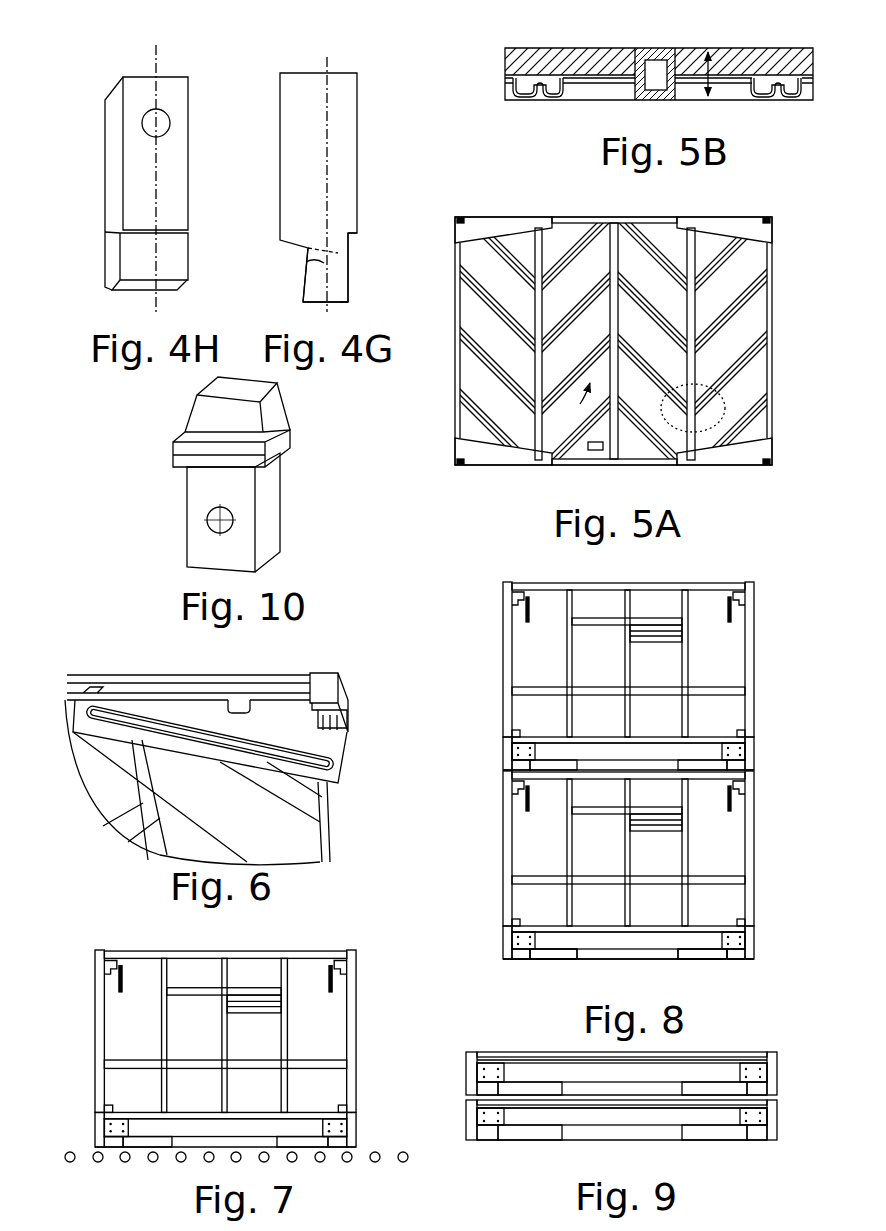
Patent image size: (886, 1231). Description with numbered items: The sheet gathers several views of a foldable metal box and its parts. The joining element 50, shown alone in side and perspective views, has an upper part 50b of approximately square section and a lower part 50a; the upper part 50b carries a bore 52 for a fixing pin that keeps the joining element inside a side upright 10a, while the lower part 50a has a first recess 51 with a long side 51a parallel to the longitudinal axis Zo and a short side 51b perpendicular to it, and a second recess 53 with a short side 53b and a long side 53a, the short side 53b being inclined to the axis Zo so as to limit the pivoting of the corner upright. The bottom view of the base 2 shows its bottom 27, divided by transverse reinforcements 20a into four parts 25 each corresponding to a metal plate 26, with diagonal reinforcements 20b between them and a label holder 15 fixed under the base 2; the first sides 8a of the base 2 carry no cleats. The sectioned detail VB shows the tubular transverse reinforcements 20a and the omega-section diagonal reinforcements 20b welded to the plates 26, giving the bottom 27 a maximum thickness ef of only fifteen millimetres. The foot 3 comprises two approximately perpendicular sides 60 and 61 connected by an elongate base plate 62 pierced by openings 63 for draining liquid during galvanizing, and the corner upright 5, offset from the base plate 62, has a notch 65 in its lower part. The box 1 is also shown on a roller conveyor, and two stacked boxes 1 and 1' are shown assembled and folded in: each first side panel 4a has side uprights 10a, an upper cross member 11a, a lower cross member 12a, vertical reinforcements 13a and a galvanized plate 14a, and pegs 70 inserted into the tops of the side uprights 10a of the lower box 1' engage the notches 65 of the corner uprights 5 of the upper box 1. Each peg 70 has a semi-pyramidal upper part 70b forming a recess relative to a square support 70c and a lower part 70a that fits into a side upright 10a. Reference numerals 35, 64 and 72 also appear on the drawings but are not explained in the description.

In FIG. 8, the box 1 is at (626, 743).
In FIG. 7, the box 1 is at (246, 1048).
In FIG. 9, the box 1 is at (577, 1073).
In FIG. 8, the lower box 1' is at (596, 886).
In FIG. 9, the lower box 1' is at (576, 1120).
In FIG. 8, the base 2 is at (606, 947).
In FIG. 9, the base 2 is at (673, 1072).
In FIG. 5A, the foot 3 is at (452, 240).
In FIG. 8, the foot 3 is at (554, 956).
In FIG. 9, the foot 3 is at (521, 1134).
In FIG. 8, the first side panel 4a is at (536, 642).
In FIG. 6, the corner upright 5 is at (341, 680).
In FIG. 8, the corner upright 5 is at (507, 750).
In FIG. 9, the corner upright 5 is at (468, 1079).
In FIG. 8, the first side 8a is at (702, 750).
In FIG. 8, the side upright 10a is at (505, 632).
In FIG. 8, the upper horizontal cross member 11a is at (598, 583).
In FIG. 8, the lower horizontal cross member 12a is at (586, 738).
In FIG. 8, the vertical reinforcement 13a is at (553, 657).
In FIG. 8, the plate 14a is at (606, 667).
In FIG. 5A, the label holder 15 is at (596, 451).
In FIG. 5B, the transverse reinforcement 20a is at (637, 100).
In FIG. 5A, the transverse reinforcement 20a is at (546, 235).
In FIG. 5B, the diagonal reinforcement 20b is at (576, 102).
In FIG. 5A, the diagonal reinforcement 20b is at (458, 401).
In FIG. 5A, the part 25 is at (765, 379).
In FIG. 5B, the metal plate 26 is at (640, 48).
In FIG. 5A, the metal plate 26 is at (470, 320).
In FIG. 5A, the bottom 27 is at (571, 404).
In FIG. 5A, the corner plate 35 is at (517, 217).
In FIG. 4H, the joining element 50 is at (128, 62).
In FIG. 4G, the joining element 50 is at (272, 92).
In FIG. 4H, the lower part of joining element 50a is at (110, 289).
In FIG. 4H, the upper part of joining element 50b is at (107, 100).
In FIG. 4H, the first recess 51 is at (108, 250).
In FIG. 4G, the first recess 51 is at (351, 269).
In FIG. 4G, the long side of first recess 51a is at (355, 300).
In FIG. 4G, the short side of first recess 51b is at (357, 241).
In FIG. 4H, the bore 52 is at (170, 123).
In FIG. 4H, the second recess 53 is at (177, 273).
In FIG. 4G, the second recess 53 is at (301, 276).
In FIG. 4G, the long side of second recess 53a is at (302, 293).
In FIG. 4G, the short side of second recess 53b is at (287, 247).
In FIG. 6, the side of foot 60 is at (350, 746).
In FIG. 6, the side of foot 61 is at (268, 698).
In FIG. 6, the base plate 62 is at (204, 728).
In FIG. 6, the opening 63 is at (241, 698).
In FIG. 6, the teeth 64 is at (349, 715).
In FIG. 6, the notch 65 is at (320, 731).
In FIG. 10, the peg 70 is at (181, 501).
In FIG. 8, the peg 70 is at (507, 580).
In FIG. 10, the lower part of peg 70a is at (282, 487).
In FIG. 10, the upper part of peg 70b is at (290, 414).
In FIG. 10, the support 70c is at (180, 451).
In FIG. 10, the hole 72 is at (234, 521).
In FIG. 4H, the longitudinal axis Zo is at (157, 46).
In FIG. 4G, the longitudinal axis Zo is at (328, 58).
In FIG. 5A, the detail VB is at (684, 385).
In FIG. 5B, the maximum thickness of the bottom ef is at (709, 86).